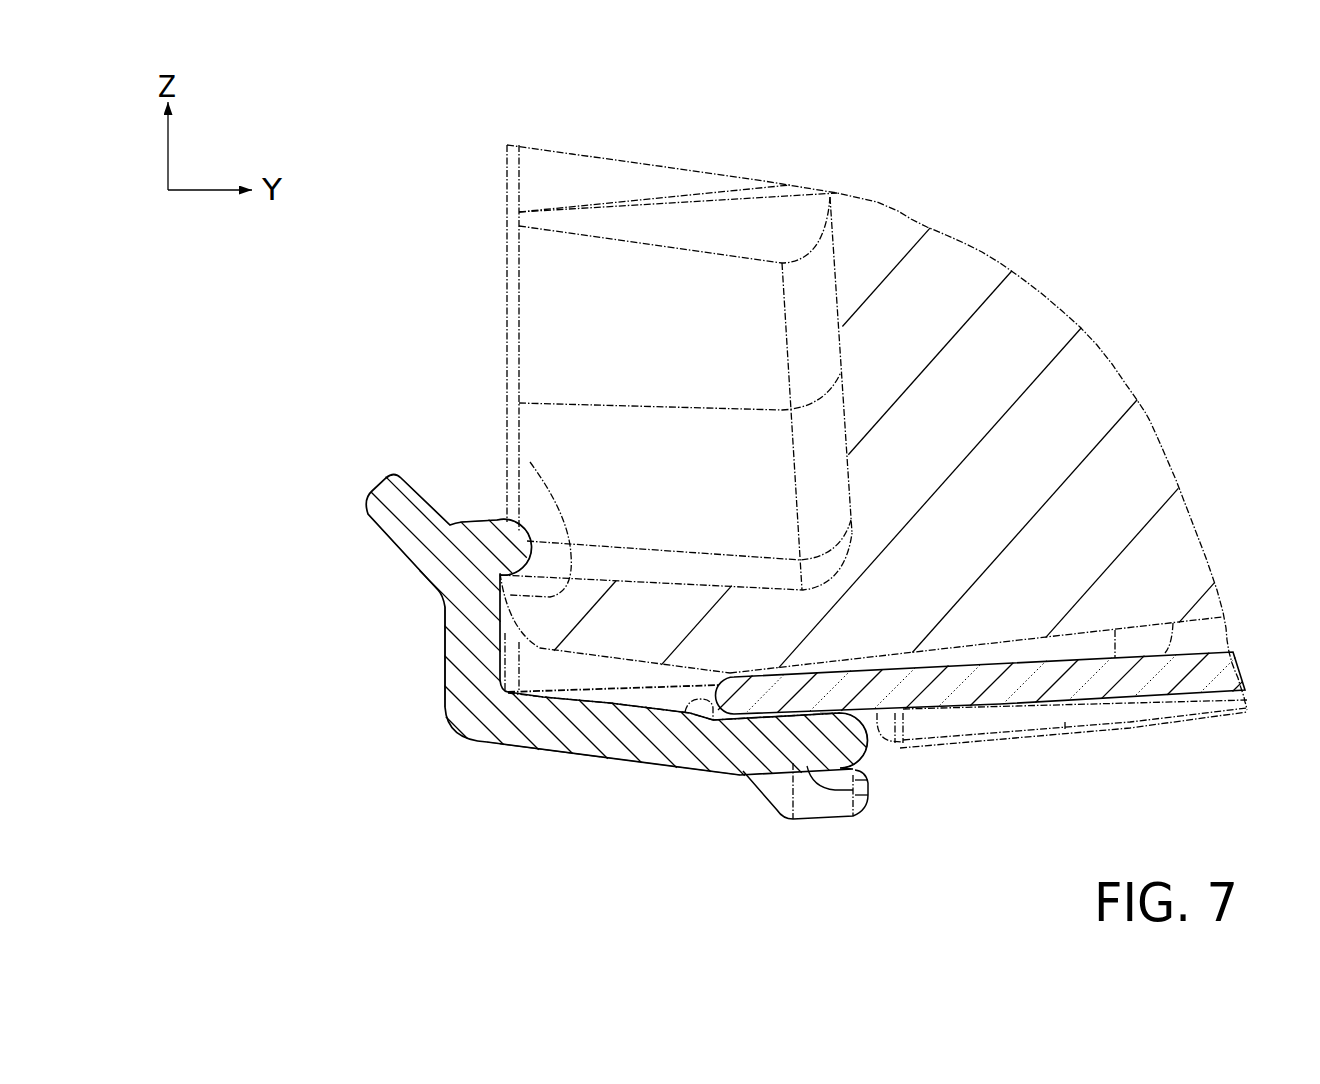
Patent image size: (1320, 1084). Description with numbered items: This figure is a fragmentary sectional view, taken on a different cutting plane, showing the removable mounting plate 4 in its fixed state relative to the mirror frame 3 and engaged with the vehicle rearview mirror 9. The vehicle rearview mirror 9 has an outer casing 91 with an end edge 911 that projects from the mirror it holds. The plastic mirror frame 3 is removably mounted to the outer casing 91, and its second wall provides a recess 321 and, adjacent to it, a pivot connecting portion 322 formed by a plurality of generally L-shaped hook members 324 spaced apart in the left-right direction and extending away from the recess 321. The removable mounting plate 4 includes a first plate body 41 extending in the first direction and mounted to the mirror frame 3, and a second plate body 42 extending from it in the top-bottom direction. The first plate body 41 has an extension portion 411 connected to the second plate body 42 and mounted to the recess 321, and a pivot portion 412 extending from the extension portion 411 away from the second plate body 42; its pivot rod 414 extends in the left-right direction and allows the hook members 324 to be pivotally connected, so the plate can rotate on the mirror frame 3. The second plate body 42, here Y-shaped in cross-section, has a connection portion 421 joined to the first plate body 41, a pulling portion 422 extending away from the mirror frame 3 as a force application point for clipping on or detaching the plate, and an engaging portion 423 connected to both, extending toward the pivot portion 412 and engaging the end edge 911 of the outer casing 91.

The mirror frame 3 is at (1209, 716).
The recess 321 is at (650, 703).
The pivot connecting portion 322 is at (790, 826).
The hook members 324 is at (815, 815).
The removable mounting plate 4 is at (455, 725).
The first plate body 41 is at (497, 750).
The extension portion 411 is at (533, 748).
The pivot portion 412 is at (863, 763).
The pivot rod 414 is at (848, 742).
The second plate body 42 is at (443, 673).
The connection portion 421 is at (443, 643).
The pulling portion 422 is at (378, 492).
The engaging portion 423 is at (500, 540).
The vehicle rearview mirror 9 is at (1050, 287).
The outer casing 91 is at (888, 587).
The end edge 911 is at (548, 490).